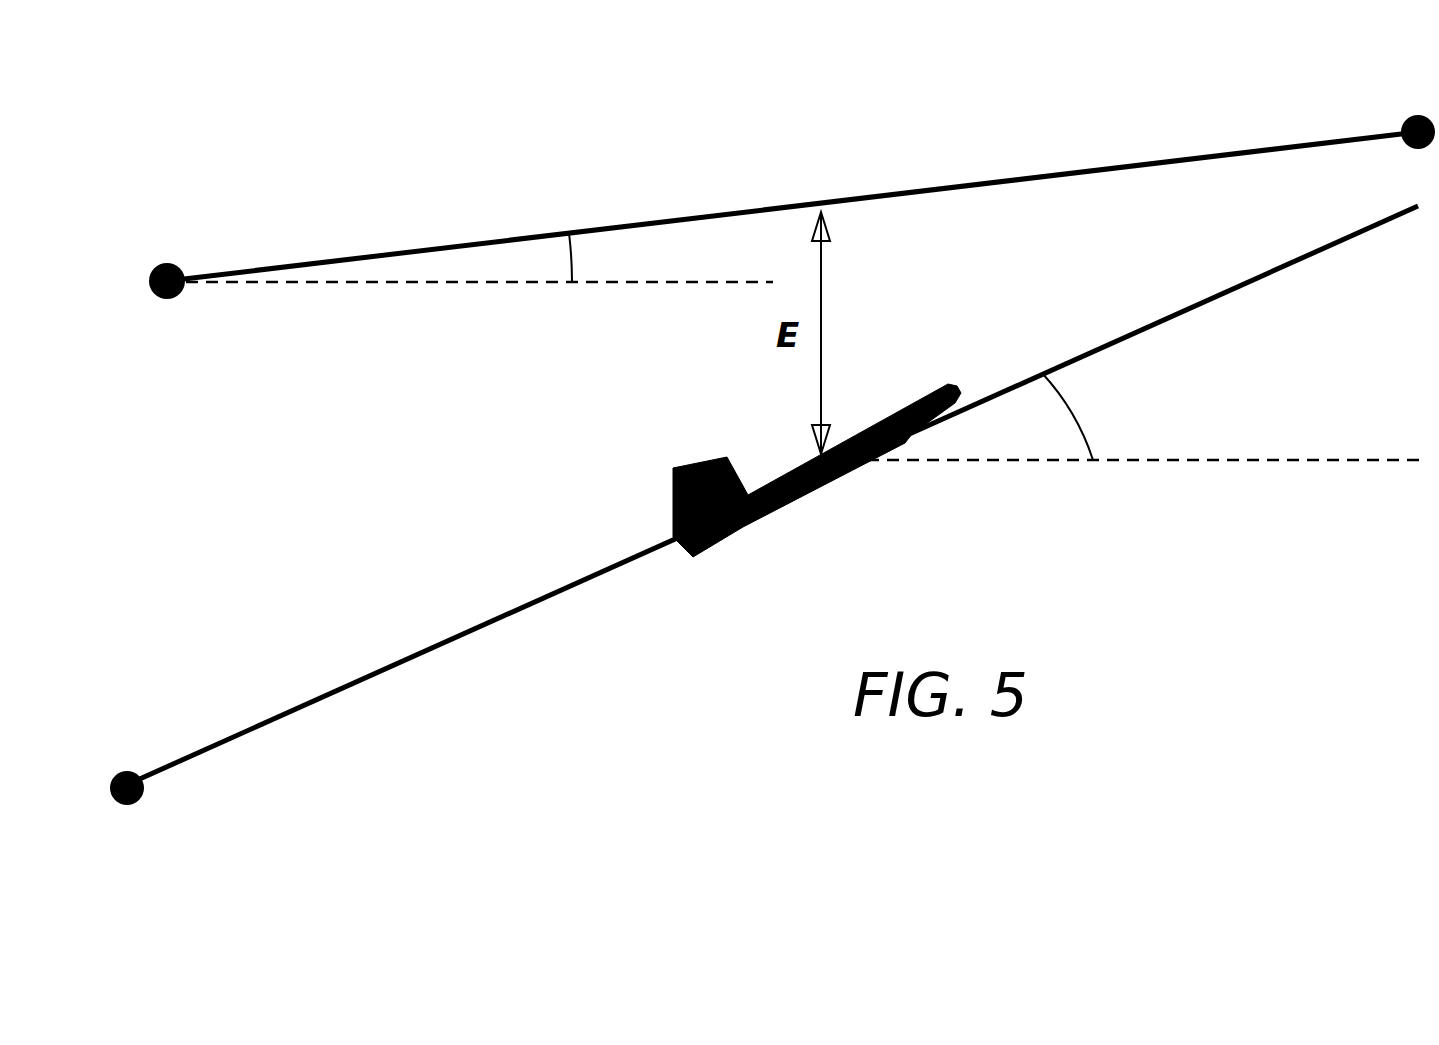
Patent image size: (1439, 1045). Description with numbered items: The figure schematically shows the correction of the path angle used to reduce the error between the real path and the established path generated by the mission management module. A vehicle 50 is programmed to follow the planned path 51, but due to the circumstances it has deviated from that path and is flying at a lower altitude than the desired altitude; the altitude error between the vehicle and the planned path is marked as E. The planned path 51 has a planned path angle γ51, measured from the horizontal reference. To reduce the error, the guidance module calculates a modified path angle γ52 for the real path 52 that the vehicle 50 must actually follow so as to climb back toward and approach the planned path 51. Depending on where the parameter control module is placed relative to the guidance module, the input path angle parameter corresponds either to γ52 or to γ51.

The vehicle 50 is at (742, 533).
The path 51 is at (729, 212).
The modified path 52 is at (382, 666).